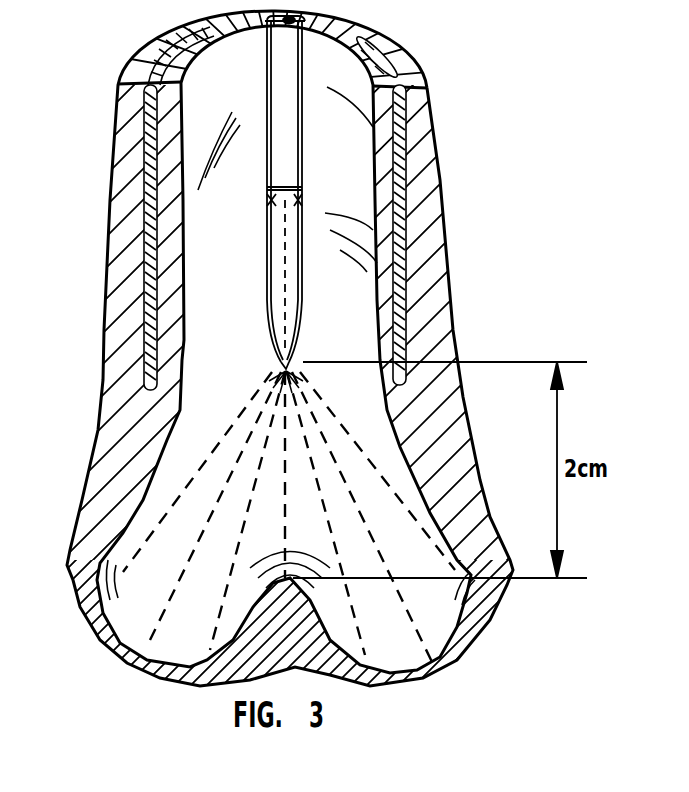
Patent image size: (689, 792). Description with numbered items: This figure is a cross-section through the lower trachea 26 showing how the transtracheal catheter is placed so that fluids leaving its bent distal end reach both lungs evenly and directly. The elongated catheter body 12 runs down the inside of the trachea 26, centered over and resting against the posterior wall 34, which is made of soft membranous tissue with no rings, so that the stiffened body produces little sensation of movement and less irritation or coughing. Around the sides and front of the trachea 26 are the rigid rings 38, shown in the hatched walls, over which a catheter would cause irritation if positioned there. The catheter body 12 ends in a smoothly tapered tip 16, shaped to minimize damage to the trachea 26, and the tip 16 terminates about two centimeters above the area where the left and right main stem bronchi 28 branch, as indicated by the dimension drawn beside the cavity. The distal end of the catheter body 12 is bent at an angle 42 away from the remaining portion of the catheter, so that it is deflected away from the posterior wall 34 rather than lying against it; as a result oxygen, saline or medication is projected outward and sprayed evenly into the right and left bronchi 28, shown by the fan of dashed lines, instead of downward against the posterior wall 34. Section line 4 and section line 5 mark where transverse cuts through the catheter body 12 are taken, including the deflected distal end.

The section line 4- 4 is at (325, 100).
The section line 5- 5 is at (280, 157).
The elongated catheter body 12 is at (293, 183).
The tapered tip 16 is at (305, 337).
The trachea 26 is at (430, 117).
The left and right main stem bronchi 28 is at (137, 630).
The posterior wall 34 is at (233, 223).
The rigid rings 38 is at (403, 230).
The angle 42 is at (273, 200).